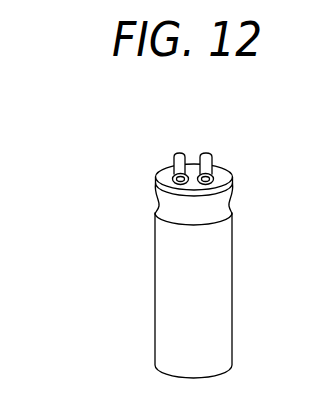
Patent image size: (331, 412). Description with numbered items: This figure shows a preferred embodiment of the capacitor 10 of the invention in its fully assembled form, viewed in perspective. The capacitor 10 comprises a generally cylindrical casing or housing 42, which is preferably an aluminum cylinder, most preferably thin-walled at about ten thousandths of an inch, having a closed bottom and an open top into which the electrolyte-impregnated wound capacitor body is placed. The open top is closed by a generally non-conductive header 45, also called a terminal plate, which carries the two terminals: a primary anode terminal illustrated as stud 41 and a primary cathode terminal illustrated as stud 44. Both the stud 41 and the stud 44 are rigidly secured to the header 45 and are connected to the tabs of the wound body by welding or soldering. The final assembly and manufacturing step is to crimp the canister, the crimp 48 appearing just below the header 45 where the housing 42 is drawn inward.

The capacitor 10 is at (112, 272).
The stud 41 is at (209, 153).
The housing 42 is at (164, 324).
The stud 44 is at (177, 153).
The header 45 is at (226, 170).
The crimp 48 is at (157, 197).